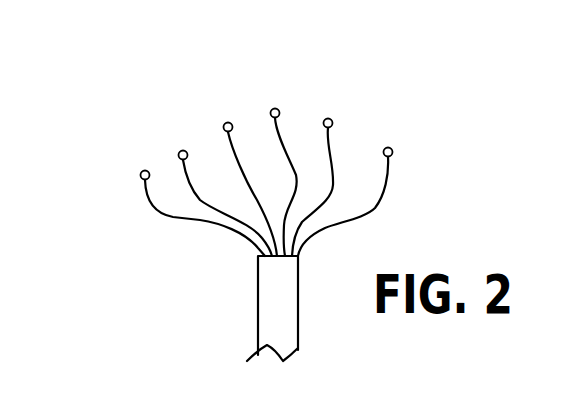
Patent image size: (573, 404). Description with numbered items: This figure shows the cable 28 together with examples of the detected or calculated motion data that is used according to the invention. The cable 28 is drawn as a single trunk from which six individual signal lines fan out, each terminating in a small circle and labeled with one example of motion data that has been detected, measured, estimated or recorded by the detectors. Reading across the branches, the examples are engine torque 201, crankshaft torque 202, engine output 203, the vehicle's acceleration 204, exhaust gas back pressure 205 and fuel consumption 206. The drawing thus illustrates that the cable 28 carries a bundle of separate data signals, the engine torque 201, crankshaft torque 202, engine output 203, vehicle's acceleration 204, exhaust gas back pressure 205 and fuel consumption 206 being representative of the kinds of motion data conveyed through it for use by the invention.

The cable 28 is at (257, 303).
The engine torque 201 is at (142, 171).
The crankshaft torque 202 is at (179, 152).
The engine output 203 is at (224, 124).
The vehicle's acceleration 204 is at (279, 109).
The exhaust gas back pressure 205 is at (332, 119).
The fuel consumption 206 is at (390, 150).